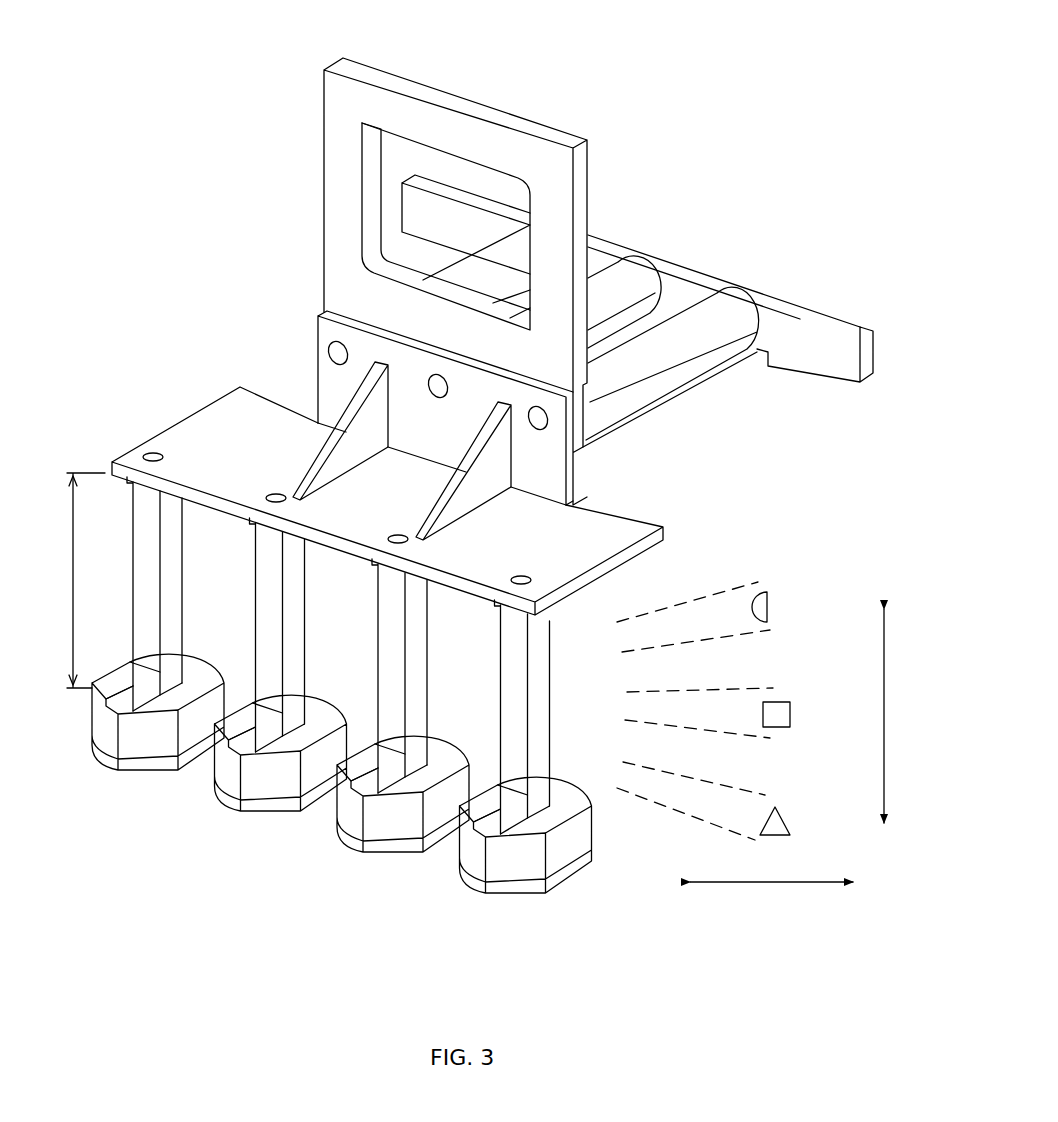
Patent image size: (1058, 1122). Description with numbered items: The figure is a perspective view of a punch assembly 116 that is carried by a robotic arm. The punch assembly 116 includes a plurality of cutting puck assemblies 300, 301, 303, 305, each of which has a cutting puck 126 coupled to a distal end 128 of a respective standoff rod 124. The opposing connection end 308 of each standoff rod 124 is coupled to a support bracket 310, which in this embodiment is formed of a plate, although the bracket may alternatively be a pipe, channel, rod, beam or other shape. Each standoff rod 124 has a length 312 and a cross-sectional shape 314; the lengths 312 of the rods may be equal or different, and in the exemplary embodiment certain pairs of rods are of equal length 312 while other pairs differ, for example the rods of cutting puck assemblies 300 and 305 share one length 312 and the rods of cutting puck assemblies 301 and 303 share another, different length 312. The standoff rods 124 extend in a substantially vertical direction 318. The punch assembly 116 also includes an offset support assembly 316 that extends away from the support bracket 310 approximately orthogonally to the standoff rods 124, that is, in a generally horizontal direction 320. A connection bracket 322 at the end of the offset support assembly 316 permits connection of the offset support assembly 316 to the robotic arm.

The punch assembly 116 is at (612, 46).
The offset support assembly 316 is at (718, 250).
The connection bracket 322 is at (823, 330).
The support bracket 310 is at (615, 522).
The connection end 308 is at (148, 456).
The length 312 is at (78, 508).
The standoff rod 124 is at (167, 582).
The distal end 128 is at (150, 690).
The cutting puck 126 is at (170, 670).
The cutting puck assembly 300 is at (150, 786).
The cutting puck assembly 301 is at (276, 830).
The cutting puck assembly 303 is at (400, 870).
The cutting puck assembly 305 is at (523, 906).
The cross-sectional shape 314 is at (768, 607).
The vertical direction 318 is at (884, 780).
The horizontal direction 320 is at (804, 882).